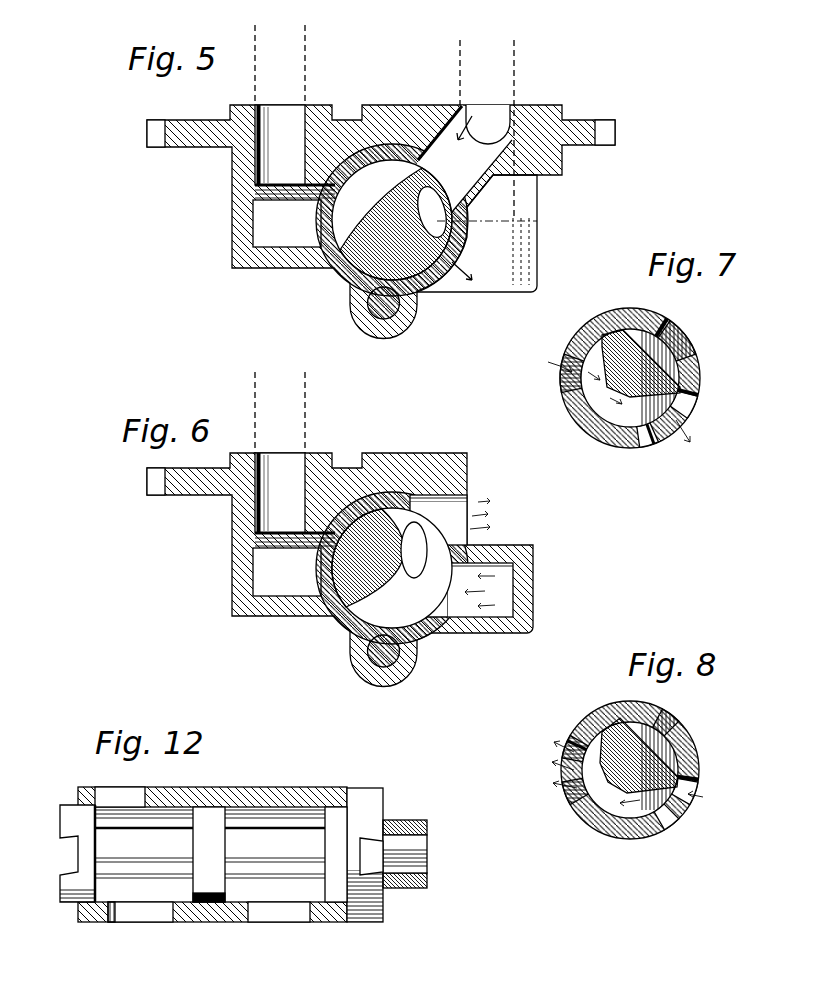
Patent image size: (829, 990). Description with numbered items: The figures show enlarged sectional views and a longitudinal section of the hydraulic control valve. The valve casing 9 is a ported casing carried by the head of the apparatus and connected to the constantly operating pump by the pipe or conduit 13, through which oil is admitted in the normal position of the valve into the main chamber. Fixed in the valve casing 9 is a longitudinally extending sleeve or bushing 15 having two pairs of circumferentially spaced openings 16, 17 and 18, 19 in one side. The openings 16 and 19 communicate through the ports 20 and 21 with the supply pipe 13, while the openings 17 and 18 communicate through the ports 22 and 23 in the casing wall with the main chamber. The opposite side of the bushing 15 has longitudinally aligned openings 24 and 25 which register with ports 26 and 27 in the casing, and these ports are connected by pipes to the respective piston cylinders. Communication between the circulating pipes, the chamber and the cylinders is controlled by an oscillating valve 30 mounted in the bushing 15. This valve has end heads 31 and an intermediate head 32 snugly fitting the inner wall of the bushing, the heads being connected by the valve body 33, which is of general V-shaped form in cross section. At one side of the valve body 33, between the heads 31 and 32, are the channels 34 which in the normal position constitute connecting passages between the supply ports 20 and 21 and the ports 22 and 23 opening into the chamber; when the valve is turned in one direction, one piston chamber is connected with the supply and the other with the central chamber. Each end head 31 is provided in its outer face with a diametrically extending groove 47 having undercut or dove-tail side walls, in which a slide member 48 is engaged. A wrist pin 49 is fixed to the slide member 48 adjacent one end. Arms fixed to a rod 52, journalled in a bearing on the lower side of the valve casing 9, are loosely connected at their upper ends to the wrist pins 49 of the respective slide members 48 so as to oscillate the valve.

In FIG. 5, the valve casing 9 is at (403, 118).
In FIG. 6, the valve casing 9 is at (396, 478).
In FIG. 5, the pipe or conduit 13 is at (460, 56).
In FIG. 5, the sleeve or bushing 15 is at (360, 264).
In FIG. 6, the sleeve or bushing 15 is at (357, 606).
In FIG. 7, the sleeve or bushing 15 is at (598, 432).
In FIG. 8, the sleeve or bushing 15 is at (588, 718).
In FIG. 12, the sleeve or bushing 15 is at (308, 790).
In FIG. 5, the opening 16 is at (470, 186).
In FIG. 7, the opening 16 is at (672, 360).
In FIG. 5, the opening 17 is at (492, 246).
In FIG. 7, the opening 17 is at (685, 405).
In FIG. 12, the opening 17 is at (252, 788).
In FIG. 6, the opening 18 is at (425, 520).
In FIG. 8, the opening 18 is at (672, 745).
In FIG. 6, the opening 19 is at (433, 610).
In FIG. 8, the opening 19 is at (688, 793).
In FIG. 12, the opening 19 is at (130, 798).
In FIG. 5, the port 20 is at (447, 135).
In FIG. 6, the port 21 is at (490, 606).
In FIG. 5, the port 22 is at (437, 272).
In FIG. 6, the port 23 is at (445, 505).
In FIG. 6, the opening 24 is at (320, 572).
In FIG. 8, the opening 24 is at (572, 784).
In FIG. 12, the opening 24 is at (168, 912).
In FIG. 5, the opening 25 is at (320, 214).
In FIG. 7, the opening 25 is at (578, 388).
In FIG. 12, the opening 25 is at (305, 917).
In FIG. 6, the port 26 is at (278, 580).
In FIG. 5, the port 27 is at (278, 232).
In FIG. 5, the oscillating valve 30 is at (383, 303).
In FIG. 6, the oscillating valve 30 is at (420, 560).
In FIG. 7, the oscillating valve 30 is at (680, 385).
In FIG. 8, the oscillating valve 30 is at (613, 735).
In FIG. 12, the oscillating valve 30 is at (183, 827).
In FIG. 6, the end heads 31 is at (368, 498).
In FIG. 8, the end heads 31 is at (642, 730).
In FIG. 12, the end heads 31 is at (72, 810).
In FIG. 5, the intermediate head 32 is at (330, 246).
In FIG. 7, the intermediate head 32 is at (592, 398).
In FIG. 12, the intermediate head 32 is at (207, 818).
In FIG. 5, the valve body 33 is at (376, 222).
In FIG. 6, the valve body 33 is at (442, 520).
In FIG. 7, the valve body 33 is at (618, 345).
In FIG. 8, the valve body 33 is at (650, 752).
In FIG. 12, the valve body 33 is at (268, 840).
In FIG. 5, the channels 34 is at (418, 188).
In FIG. 7, the channels 34 is at (632, 342).
In FIG. 8, the channels 34 is at (672, 775).
In FIG. 12, the channels 34 is at (300, 832).
In FIG. 12, the groove 47 is at (372, 875).
In FIG. 12, the slide member 48 is at (375, 856).
In FIG. 12, the wrist pin 49 is at (420, 838).
In FIG. 6, the rod 52 is at (387, 652).